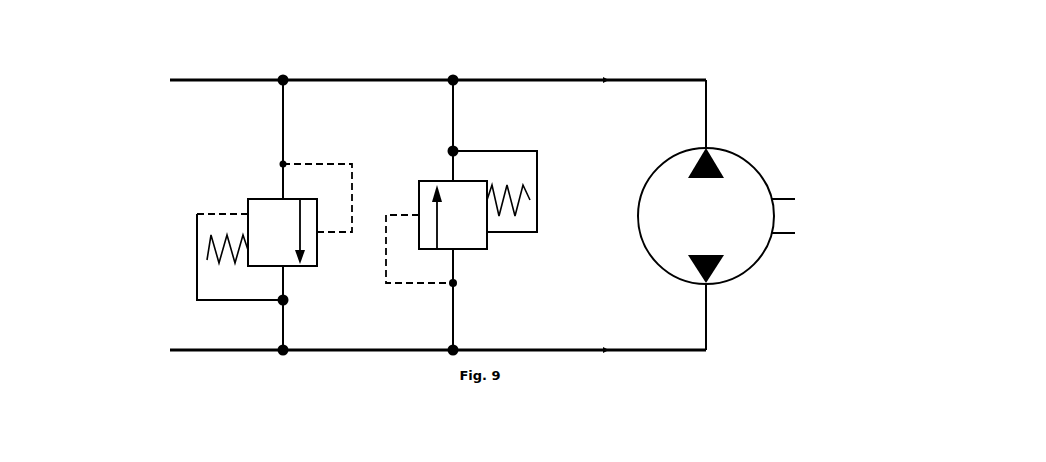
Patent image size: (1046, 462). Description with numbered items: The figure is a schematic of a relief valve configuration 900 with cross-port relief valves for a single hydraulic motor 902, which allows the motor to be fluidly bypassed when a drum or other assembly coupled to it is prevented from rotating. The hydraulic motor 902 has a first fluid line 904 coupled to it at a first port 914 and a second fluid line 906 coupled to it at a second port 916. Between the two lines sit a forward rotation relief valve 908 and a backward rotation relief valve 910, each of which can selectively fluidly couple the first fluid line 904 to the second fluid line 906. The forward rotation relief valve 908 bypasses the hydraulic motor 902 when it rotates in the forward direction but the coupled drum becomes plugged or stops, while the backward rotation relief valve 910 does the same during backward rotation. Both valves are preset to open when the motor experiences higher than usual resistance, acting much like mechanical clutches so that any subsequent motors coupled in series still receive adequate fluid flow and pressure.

The relief valve configuration 900 is at (830, 101).
The hydraulic motor 902 is at (769, 246).
The first fluid line 904 is at (170, 350).
The second fluid line 906 is at (170, 80).
The forward rotation relief valve 908 is at (552, 168).
The backward rotation relief valve 910 is at (190, 175).
The first port 914 is at (706, 283).
The second port 916 is at (706, 148).